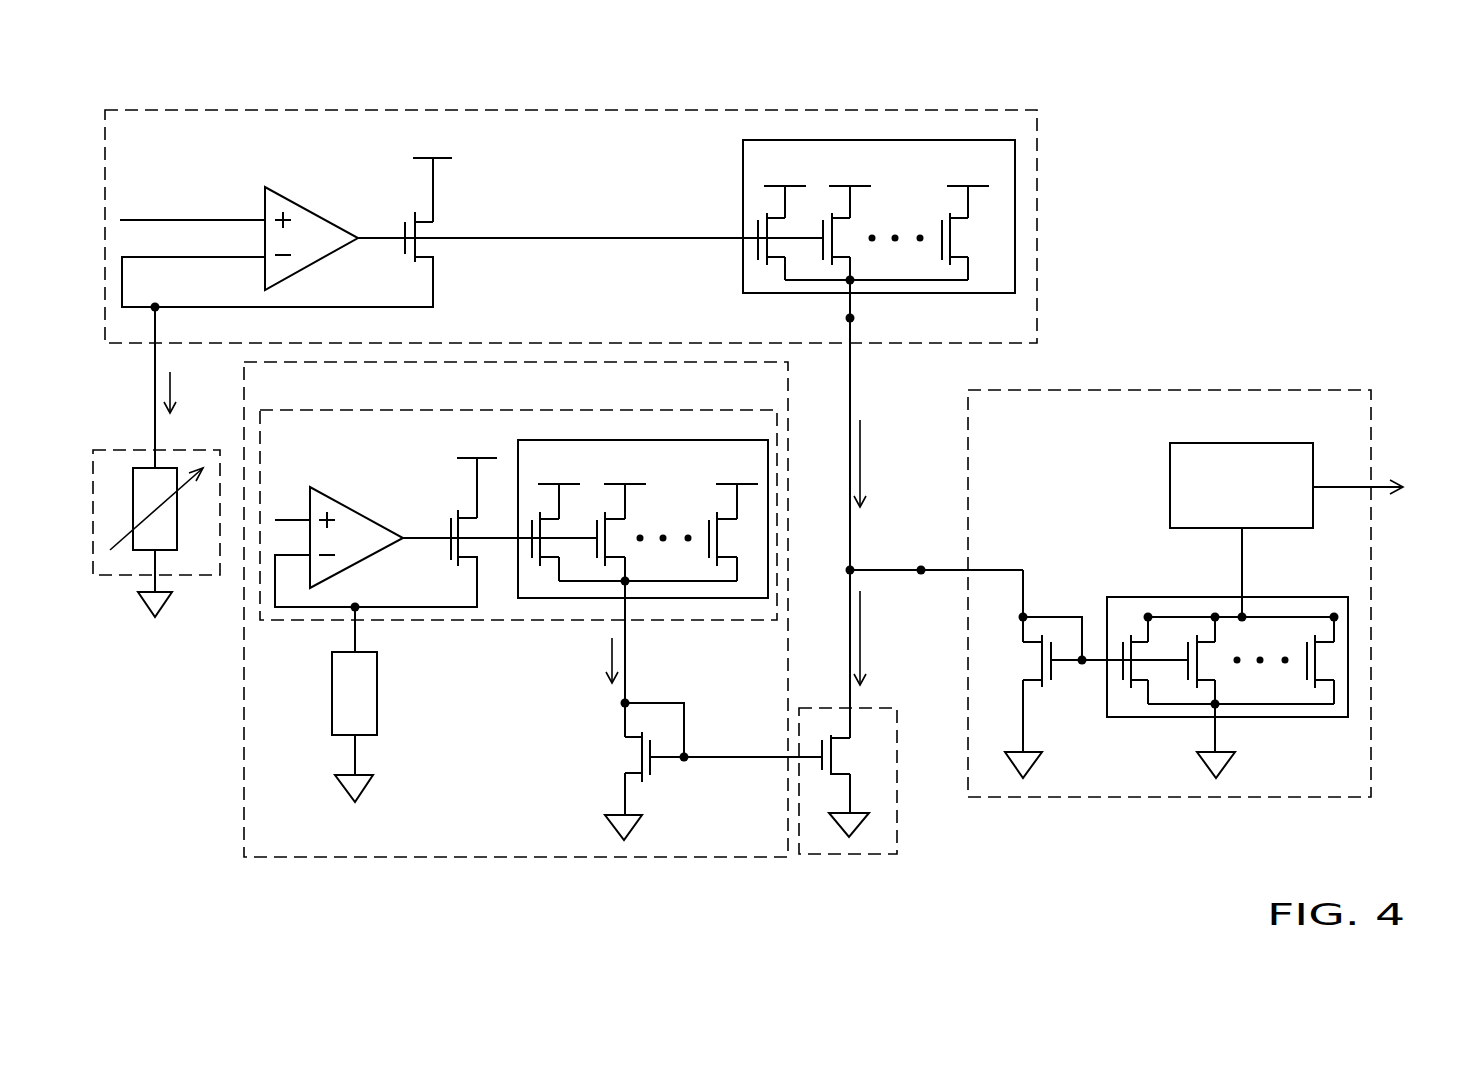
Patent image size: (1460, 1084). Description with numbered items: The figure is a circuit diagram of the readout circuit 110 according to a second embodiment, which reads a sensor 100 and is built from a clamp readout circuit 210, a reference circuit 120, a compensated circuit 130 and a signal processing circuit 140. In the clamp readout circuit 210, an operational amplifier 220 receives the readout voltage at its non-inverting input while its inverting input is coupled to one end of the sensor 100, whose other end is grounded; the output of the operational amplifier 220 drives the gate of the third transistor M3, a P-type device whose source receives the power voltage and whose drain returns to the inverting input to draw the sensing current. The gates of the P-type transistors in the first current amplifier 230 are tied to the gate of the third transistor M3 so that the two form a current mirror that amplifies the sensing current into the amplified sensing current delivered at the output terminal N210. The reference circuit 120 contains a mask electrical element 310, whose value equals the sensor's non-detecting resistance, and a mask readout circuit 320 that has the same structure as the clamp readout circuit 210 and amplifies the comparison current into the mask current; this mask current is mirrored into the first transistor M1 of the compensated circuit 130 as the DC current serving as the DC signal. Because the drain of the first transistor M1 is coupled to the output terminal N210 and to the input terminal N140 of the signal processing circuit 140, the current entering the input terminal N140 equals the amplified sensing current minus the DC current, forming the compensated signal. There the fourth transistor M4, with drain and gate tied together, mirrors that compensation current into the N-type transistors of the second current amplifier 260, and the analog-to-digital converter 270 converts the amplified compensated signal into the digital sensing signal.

The readout circuit 110 is at (150, 931).
The sensor 100 is at (110, 577).
The reference circuit 120 is at (243, 665).
The compensated circuit 130 is at (886, 781).
The signal processing circuit 140 is at (1243, 387).
The clamp readout circuit 210 is at (235, 107).
The operational amplifier 220 is at (328, 215).
The first current amplifier 230 is at (743, 272).
The second current amplifier 260 is at (1287, 596).
The analog-to-digital converter 270 is at (1273, 442).
The mask electrical element 310 is at (378, 695).
The mask readout circuit 320 is at (388, 408).
The first transistor M1 is at (852, 786).
The third transistor M3 is at (437, 191).
The fourth transistor M4 is at (1021, 706).
The output terminal of the clamp readout circuit N210 is at (857, 318).
The input terminal of the signal processing circuit N140 is at (921, 566).